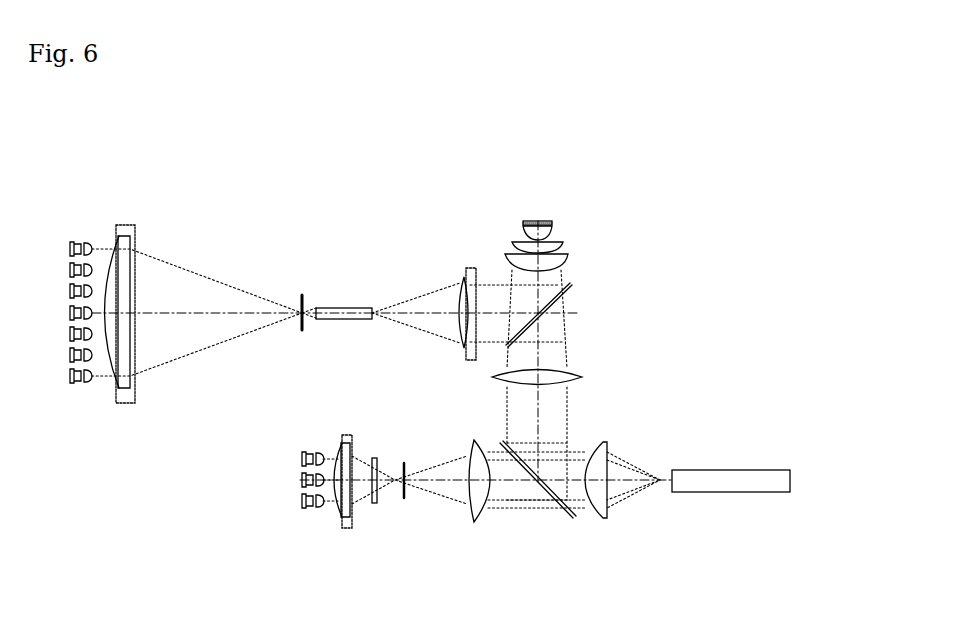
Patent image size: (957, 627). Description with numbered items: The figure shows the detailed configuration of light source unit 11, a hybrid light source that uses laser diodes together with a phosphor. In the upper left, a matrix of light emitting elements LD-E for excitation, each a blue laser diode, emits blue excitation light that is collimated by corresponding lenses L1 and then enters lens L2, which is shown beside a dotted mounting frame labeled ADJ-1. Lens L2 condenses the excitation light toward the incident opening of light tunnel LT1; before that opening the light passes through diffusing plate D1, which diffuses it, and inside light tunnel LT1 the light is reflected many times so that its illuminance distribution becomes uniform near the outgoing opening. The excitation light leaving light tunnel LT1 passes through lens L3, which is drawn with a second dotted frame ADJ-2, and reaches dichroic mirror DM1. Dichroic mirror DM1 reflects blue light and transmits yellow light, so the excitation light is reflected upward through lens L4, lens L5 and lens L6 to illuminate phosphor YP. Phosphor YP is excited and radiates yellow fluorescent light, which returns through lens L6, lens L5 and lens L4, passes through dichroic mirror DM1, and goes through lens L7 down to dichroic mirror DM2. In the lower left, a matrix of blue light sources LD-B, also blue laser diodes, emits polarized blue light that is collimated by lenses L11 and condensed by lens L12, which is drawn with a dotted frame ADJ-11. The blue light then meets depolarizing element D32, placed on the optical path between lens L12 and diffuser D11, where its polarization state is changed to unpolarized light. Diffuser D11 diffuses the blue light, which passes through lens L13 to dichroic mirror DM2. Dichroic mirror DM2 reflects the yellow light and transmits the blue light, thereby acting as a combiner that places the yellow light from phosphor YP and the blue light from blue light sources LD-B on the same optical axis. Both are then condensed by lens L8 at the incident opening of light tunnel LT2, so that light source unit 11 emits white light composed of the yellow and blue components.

The light source unit 11 is at (609, 131).
The light emitting element for excitation LD-E is at (69, 238).
The lens L1 is at (88, 240).
The lens L2 is at (108, 358).
The adjustment mechanism ADJ-1 is at (127, 225).
The diffusing plate D1 is at (302, 292).
The light tunnel LT1 is at (342, 307).
The lens L3 is at (460, 278).
The adjustment mechanism ADJ-2 is at (465, 358).
The phosphor YP is at (535, 218).
The lens L6 is at (553, 231).
The lens L5 is at (567, 243).
The lens L4 is at (567, 258).
The dichroic mirror DM1 is at (553, 303).
The lens L7 is at (583, 377).
The blue light source LD-B is at (302, 452).
The lens L11 is at (320, 507).
The lens L12 is at (340, 452).
The adjustment mechanism ADJ-11 is at (348, 527).
The depolarizing element D32 is at (377, 458).
The diffuser D11 is at (405, 500).
The lens L13 is at (483, 510).
The dichroic mirror DM2 is at (562, 512).
The lens L8 is at (608, 518).
The light tunnel LT2 is at (710, 470).